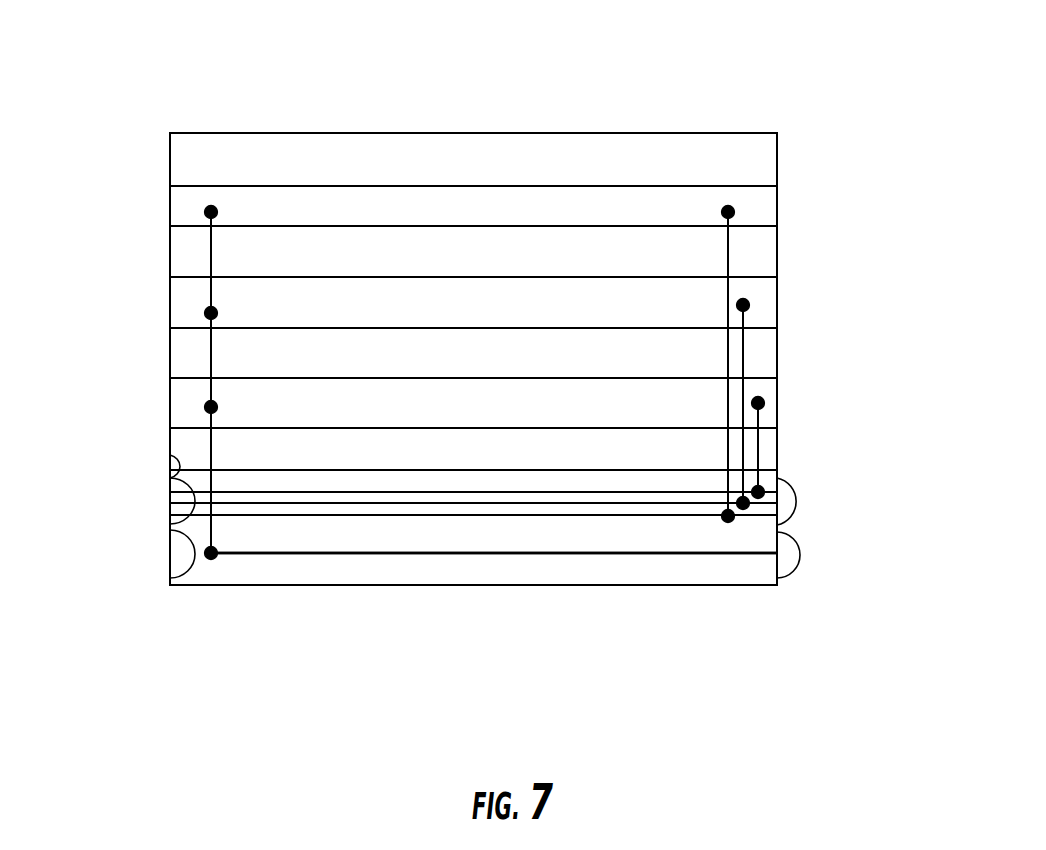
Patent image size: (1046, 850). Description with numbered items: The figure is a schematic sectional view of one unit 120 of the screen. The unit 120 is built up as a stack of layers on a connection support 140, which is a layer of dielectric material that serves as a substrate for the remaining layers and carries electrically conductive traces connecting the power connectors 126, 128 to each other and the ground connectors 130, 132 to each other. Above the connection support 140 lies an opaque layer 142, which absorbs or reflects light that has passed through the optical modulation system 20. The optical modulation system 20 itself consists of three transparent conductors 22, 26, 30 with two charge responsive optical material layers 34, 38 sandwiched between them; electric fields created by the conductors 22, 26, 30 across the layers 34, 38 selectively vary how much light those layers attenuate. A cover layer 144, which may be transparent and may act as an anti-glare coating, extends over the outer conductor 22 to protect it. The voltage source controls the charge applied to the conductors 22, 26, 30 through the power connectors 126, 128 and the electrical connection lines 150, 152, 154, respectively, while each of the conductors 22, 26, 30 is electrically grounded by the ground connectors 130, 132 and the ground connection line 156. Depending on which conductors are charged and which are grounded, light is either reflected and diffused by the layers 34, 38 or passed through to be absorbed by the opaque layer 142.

The unit 120 is at (742, 104).
The cover layer 144 is at (777, 160).
The optical modulation system 20 is at (777, 186).
The conductor 22 is at (170, 209).
The charge responsive optical material layer 34 is at (170, 264).
The conductor 26 is at (170, 317).
The charge responsive optical material layer 38 is at (170, 366).
The conductor 30 is at (170, 407).
The power connector 128 is at (172, 459).
The ground connector 132 is at (187, 580).
The opaque layer 142 is at (777, 455).
The power connector 126 is at (801, 500).
The ground connector 130 is at (801, 555).
The connection support 140 is at (698, 585).
The ground connection line 156 is at (335, 553).
The electrical connection line 154 is at (489, 490).
The electrical connection line 152 is at (546, 503).
The electrical connection line 150 is at (598, 512).